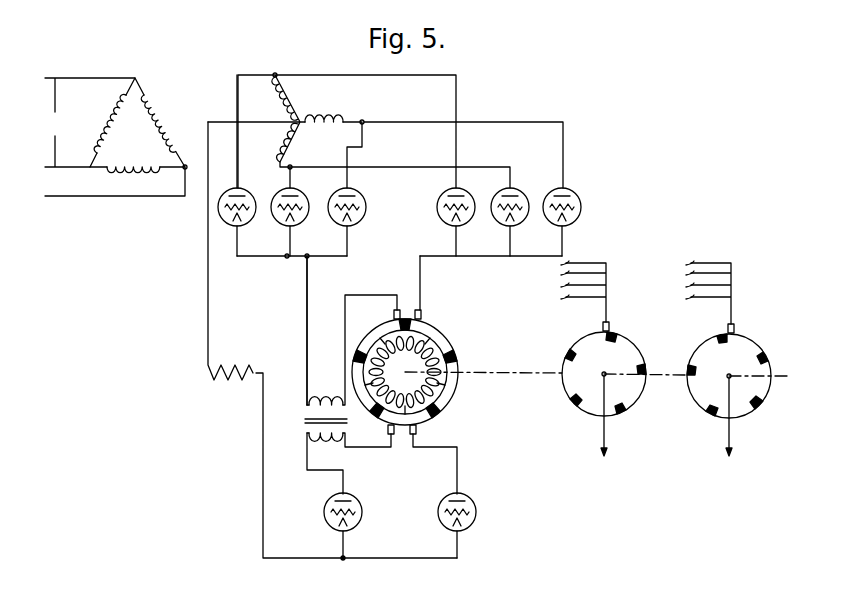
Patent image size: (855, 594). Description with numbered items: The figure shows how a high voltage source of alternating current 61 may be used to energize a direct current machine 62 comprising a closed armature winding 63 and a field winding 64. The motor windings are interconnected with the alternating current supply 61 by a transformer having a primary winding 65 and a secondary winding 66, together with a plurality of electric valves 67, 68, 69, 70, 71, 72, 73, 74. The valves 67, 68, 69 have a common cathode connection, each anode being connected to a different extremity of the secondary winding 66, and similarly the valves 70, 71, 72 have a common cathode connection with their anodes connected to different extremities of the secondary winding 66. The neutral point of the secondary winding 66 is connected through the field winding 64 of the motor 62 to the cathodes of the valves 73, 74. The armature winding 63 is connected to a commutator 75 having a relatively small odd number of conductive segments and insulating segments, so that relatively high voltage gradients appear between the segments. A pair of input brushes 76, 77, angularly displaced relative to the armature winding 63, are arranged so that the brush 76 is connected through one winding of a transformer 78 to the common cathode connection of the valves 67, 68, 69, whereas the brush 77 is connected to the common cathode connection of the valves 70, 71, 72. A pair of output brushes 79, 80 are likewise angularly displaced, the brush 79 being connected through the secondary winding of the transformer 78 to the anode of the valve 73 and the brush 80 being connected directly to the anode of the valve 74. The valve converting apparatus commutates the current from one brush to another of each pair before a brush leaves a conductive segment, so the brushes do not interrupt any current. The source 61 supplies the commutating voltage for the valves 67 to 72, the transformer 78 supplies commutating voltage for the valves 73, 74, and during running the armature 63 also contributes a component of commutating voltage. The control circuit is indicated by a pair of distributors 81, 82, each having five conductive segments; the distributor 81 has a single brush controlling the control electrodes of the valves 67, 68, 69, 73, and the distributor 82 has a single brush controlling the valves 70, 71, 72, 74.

The high voltage source of alternating current 61 is at (50, 196).
The direct current machine 62 is at (291, 343).
The closed armature winding 63 is at (387, 382).
The field winding 64 is at (235, 380).
The primary winding 65 is at (142, 141).
The secondary winding 66 is at (294, 96).
The electric valve 67 is at (247, 191).
The electric valve 68 is at (299, 191).
The electric valve 69 is at (353, 191).
The electric valve 70 is at (461, 191).
The electric valve 71 is at (515, 191).
The electric valve 72 is at (568, 191).
The electric valve 73 is at (355, 499).
The electric valve 74 is at (467, 499).
The commutator 75 is at (448, 345).
The input brush 76 is at (393, 313).
The input brush 77 is at (423, 317).
The transformer 78 is at (303, 420).
The output brush 79 is at (387, 433).
The output brush 80 is at (417, 434).
The distributor 81 is at (636, 396).
The distributor 82 is at (766, 392).